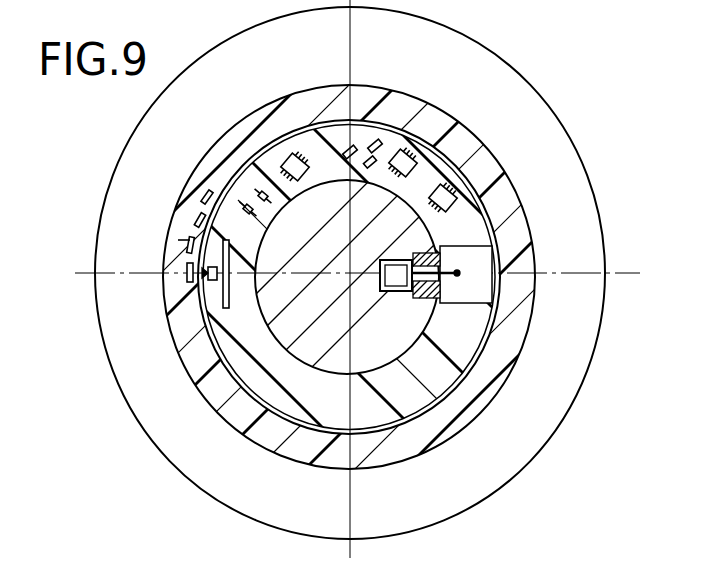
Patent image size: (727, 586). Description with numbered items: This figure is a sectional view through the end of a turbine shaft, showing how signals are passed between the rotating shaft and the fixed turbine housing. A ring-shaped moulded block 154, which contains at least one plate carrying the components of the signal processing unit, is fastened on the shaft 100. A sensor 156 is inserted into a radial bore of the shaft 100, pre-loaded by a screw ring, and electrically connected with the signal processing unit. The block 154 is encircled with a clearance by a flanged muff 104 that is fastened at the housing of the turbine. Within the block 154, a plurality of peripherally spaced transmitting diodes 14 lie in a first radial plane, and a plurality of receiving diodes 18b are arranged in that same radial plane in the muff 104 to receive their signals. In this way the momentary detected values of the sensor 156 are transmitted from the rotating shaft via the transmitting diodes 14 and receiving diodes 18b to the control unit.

The transmitting diodes 14 is at (205, 288).
The receiving diodes 18b is at (207, 197).
The shaft 100 is at (293, 325).
The flanged muff 104 is at (482, 398).
The ring-shaped moulded block 154 is at (468, 327).
The sensor 156 is at (393, 268).